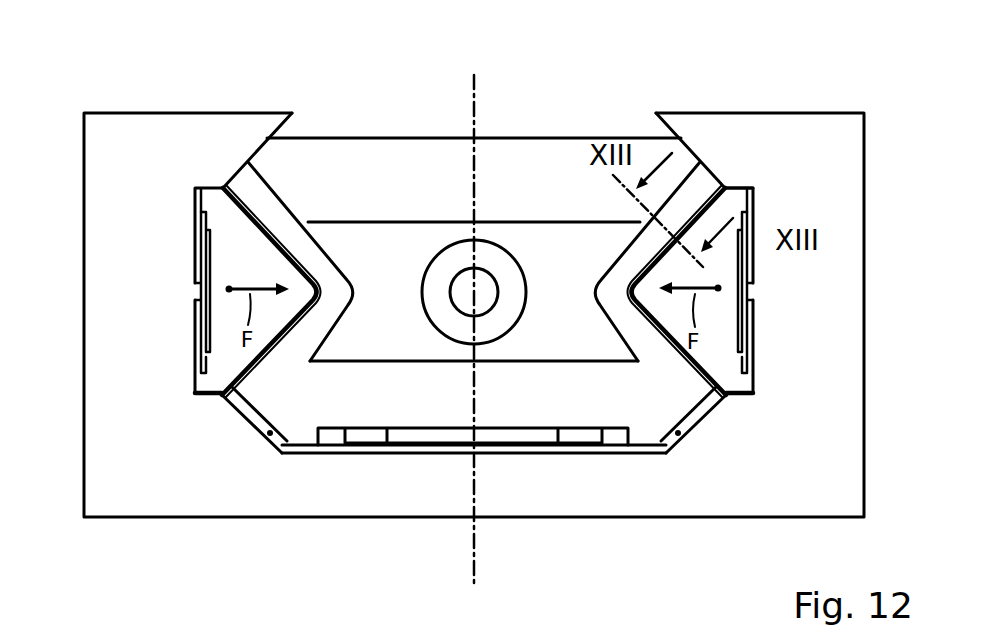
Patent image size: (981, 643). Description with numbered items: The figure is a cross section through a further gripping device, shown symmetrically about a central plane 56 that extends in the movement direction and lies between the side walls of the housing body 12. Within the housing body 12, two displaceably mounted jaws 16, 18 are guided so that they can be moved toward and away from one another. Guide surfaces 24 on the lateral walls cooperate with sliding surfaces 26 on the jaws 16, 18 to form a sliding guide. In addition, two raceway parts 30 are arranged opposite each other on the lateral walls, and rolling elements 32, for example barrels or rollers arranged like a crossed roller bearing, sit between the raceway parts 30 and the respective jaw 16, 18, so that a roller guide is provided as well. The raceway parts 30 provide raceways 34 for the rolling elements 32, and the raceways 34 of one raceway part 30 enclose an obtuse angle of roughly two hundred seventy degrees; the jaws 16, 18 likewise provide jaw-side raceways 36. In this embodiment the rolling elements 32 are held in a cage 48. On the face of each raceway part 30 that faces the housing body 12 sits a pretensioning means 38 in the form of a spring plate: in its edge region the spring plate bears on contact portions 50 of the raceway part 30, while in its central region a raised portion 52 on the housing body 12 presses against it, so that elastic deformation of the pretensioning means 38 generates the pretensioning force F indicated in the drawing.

The housing body 12 is at (162, 135).
The jaw 16 is at (474, 252).
The jaw 18 is at (400, 162).
The guide surfaces 24 is at (256, 150).
The sliding surfaces 26 is at (265, 153).
The raceway parts 30 is at (233, 353).
The rolling elements 32 is at (456, 375).
The raceways 34 is at (729, 190).
The jaw-side raceways 36 is at (614, 238).
The pretensioning means 38 is at (198, 246).
The cage 48 is at (282, 365).
The contact portions 50 is at (210, 197).
The raised portion 52 is at (196, 288).
The central plane 56 is at (475, 105).